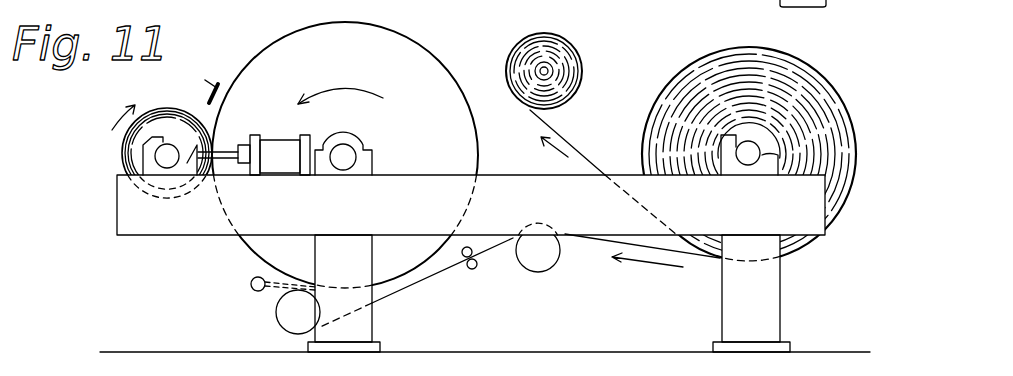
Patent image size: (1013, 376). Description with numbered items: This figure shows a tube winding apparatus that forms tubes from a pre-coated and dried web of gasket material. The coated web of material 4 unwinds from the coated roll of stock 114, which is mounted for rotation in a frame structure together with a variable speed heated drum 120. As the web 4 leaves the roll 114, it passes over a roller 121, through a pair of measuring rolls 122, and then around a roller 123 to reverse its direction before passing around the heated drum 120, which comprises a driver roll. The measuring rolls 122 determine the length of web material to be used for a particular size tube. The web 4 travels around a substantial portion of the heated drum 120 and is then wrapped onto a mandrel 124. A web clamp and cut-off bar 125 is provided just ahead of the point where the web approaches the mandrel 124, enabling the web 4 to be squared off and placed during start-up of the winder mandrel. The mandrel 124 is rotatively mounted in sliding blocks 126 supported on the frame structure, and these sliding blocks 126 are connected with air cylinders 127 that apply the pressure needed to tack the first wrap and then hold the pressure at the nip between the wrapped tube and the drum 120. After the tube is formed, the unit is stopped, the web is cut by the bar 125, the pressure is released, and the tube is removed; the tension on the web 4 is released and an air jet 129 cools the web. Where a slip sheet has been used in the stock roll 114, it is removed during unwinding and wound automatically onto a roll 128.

The coated web of material 4 is at (662, 250).
The coated roll of stock 114 is at (850, 62).
The variable speed heated drum 120 is at (438, 22).
The roller 121 is at (549, 268).
The measuring rolls 122 is at (467, 259).
The roller 123 is at (282, 312).
The mandrel 124 is at (123, 128).
The web clamp and cut-off bar 125 is at (214, 82).
The sliding blocks 126 is at (148, 160).
The air cylinders 127 is at (283, 137).
The roll 128 is at (592, 22).
The air jet 129 is at (239, 283).